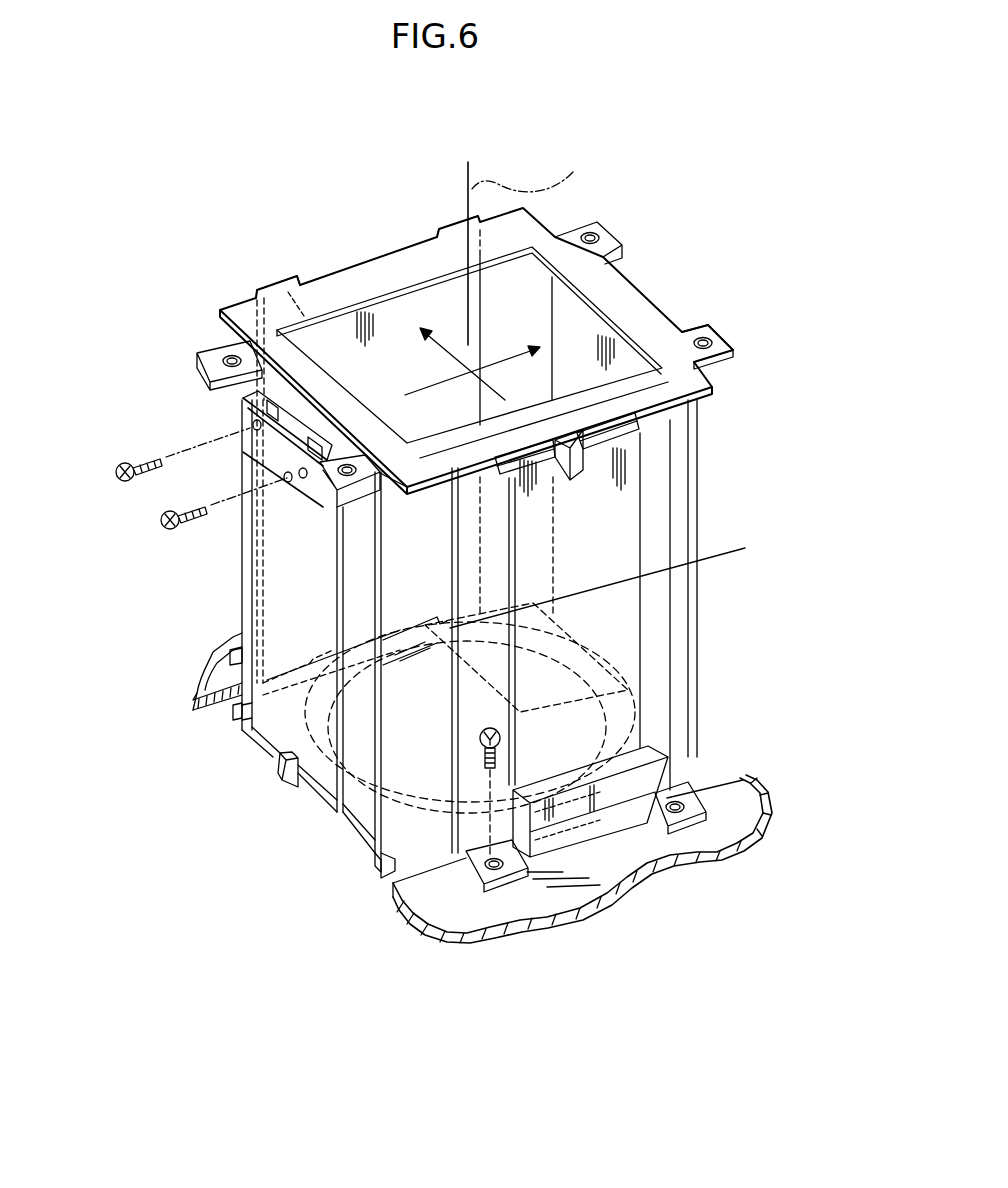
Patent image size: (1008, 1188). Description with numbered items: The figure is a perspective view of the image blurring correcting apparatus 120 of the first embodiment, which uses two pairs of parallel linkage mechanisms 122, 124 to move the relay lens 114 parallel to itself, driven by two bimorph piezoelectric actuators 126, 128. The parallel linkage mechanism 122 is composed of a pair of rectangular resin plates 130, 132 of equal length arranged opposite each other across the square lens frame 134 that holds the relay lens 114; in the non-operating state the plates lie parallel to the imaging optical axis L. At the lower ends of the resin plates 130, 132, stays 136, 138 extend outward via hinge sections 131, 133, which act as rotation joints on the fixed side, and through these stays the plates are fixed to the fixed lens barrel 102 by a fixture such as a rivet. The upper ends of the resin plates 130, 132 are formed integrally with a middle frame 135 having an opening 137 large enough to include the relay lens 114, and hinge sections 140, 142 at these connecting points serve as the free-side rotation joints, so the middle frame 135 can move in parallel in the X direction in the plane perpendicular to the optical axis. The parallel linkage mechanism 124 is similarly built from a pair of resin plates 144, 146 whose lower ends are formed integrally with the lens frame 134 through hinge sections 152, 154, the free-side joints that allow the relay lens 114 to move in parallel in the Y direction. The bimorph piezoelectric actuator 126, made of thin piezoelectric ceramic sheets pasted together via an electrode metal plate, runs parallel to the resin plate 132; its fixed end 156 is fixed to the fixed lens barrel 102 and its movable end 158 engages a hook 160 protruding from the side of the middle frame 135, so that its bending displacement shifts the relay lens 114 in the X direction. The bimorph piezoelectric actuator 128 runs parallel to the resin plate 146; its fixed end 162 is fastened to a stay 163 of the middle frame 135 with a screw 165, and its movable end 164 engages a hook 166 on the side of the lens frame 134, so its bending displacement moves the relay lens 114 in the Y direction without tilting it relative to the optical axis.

The fixed lens barrel 102 is at (728, 853).
The relay lens 114 is at (400, 880).
The image blurring correcting apparatus 120 is at (804, 274).
The parallel linkage mechanism 122 is at (350, 275).
The parallel linkage mechanism 124 is at (647, 295).
The bimorph piezoelectric actuator 126 is at (628, 617).
The bimorph piezoelectric actuator 128 is at (290, 558).
The resin plate 130 is at (403, 500).
The hinge section 131 is at (718, 547).
The resin plate 132 is at (660, 738).
The hinge section 133 is at (706, 787).
The lens frame 134 is at (407, 840).
The middle frame 135 is at (604, 230).
The stay 136 is at (282, 688).
The opening 137 is at (304, 312).
The stay 138 is at (712, 812).
The hinge section 140 is at (438, 230).
The hinge section 142 is at (470, 470).
The resin plate 144 is at (684, 412).
The resin plate 146 is at (198, 358).
The hinge section 152 is at (660, 666).
The hinge section 154 is at (353, 833).
The fixed end 156 is at (593, 802).
The movable end 158 is at (636, 508).
The hook 160 is at (588, 476).
The fixed end 162 is at (243, 474).
The stay 163 is at (200, 408).
The movable end 164 is at (330, 777).
The screw 165 is at (114, 474).
The hook 166 is at (280, 763).